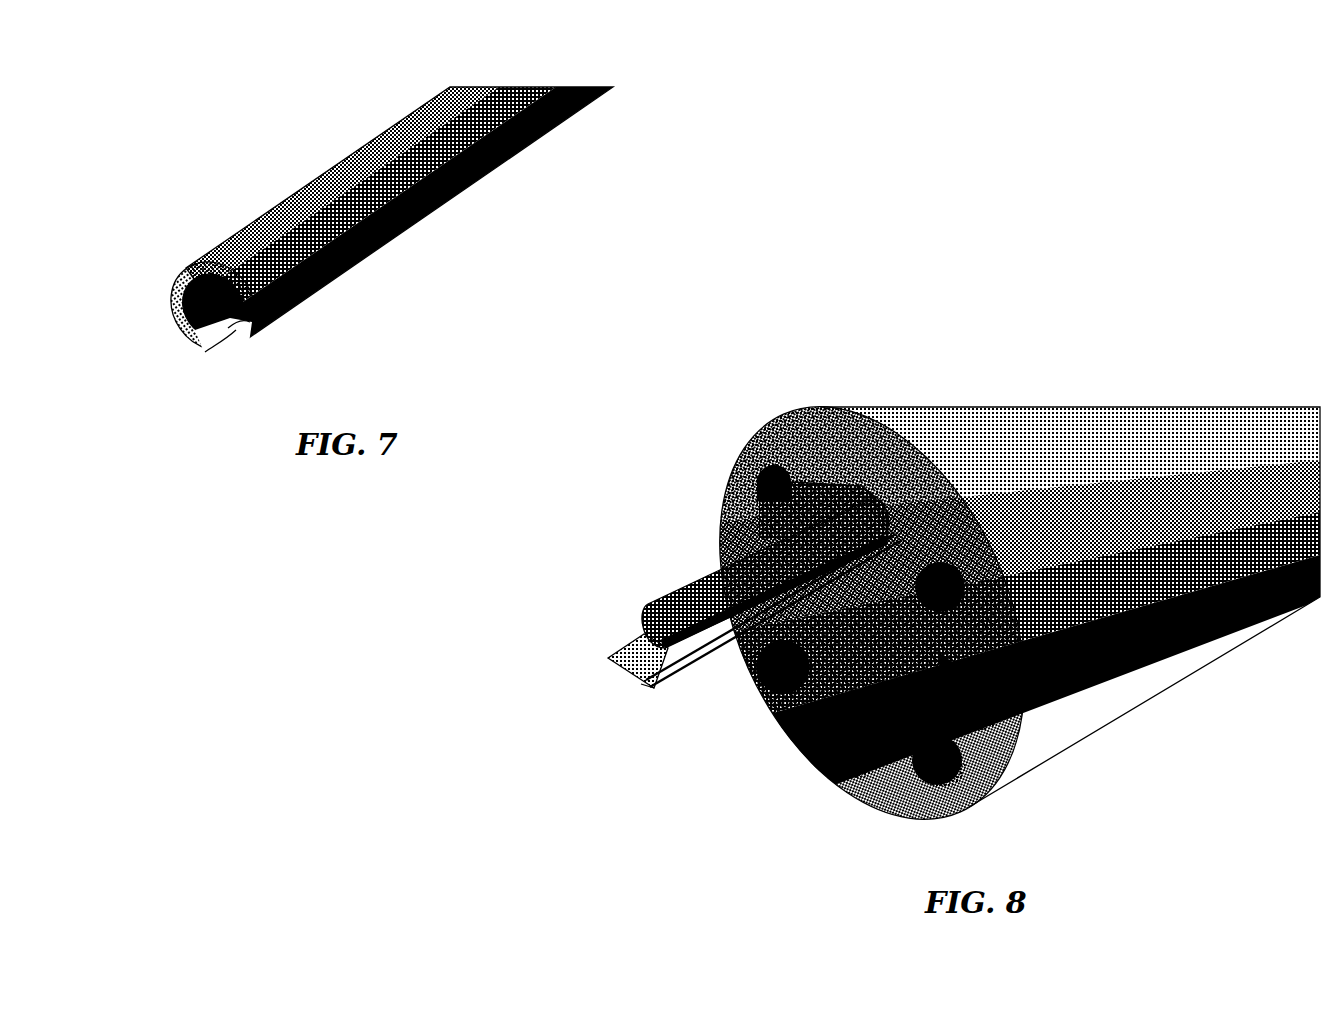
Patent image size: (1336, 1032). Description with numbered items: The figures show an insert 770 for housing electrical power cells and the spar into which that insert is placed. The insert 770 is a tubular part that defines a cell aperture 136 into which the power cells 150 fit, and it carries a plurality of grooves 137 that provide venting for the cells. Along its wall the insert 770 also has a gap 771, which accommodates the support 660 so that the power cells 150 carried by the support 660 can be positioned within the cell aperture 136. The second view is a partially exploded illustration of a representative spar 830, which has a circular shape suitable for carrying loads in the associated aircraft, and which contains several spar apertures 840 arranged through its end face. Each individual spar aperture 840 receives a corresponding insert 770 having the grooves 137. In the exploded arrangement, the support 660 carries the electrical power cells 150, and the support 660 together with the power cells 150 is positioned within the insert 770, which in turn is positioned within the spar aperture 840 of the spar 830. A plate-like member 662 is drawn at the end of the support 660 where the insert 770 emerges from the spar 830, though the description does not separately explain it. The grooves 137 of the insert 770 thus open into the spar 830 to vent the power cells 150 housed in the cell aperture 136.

In FIG. 7, the insert 770 is at (421, 108).
In FIG. 8, the insert 770 is at (793, 530).
In FIG. 7, the gap 771 is at (268, 316).
In FIG. 7, the cell aperture 136 is at (184, 301).
In FIG. 7, the grooves 137 is at (205, 352).
In FIG. 8, the grooves 137 is at (676, 566).
In FIG. 8, the spar 830 is at (1097, 727).
In FIG. 8, the spar apertures 840 is at (936, 779).
In FIG. 8, the plate 662 is at (612, 657).
In FIG. 8, the support 660 is at (641, 684).
In FIG. 8, the power cells 150 is at (716, 634).